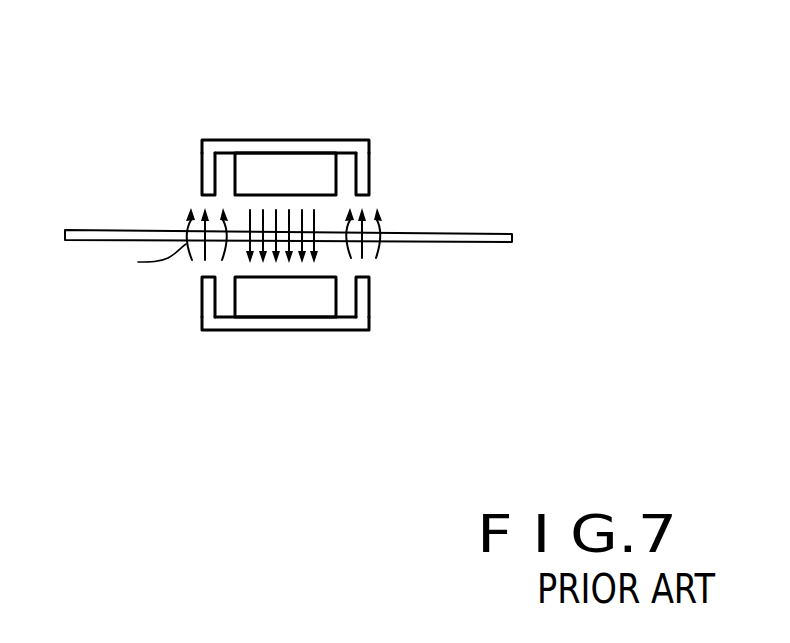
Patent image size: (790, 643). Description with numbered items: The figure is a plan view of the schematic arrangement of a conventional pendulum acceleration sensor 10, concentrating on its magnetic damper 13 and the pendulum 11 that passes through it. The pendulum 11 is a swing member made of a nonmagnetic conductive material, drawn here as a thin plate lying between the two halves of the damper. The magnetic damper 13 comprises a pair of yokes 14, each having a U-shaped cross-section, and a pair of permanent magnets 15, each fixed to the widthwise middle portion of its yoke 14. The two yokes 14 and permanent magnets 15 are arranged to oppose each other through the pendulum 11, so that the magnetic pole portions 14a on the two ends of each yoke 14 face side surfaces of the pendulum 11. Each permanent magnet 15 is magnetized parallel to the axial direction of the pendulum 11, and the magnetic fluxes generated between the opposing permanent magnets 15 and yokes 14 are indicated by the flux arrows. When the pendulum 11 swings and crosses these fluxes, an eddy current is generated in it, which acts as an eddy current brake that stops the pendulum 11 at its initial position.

The pendulum acceleration sensor 10 is at (296, 260).
The pendulum 11 is at (478, 232).
The magnetic damper 13 is at (281, 260).
The yoke 14 is at (281, 239).
The magnetic pole portion 14a is at (207, 175).
The permanent magnet 15 is at (257, 165).